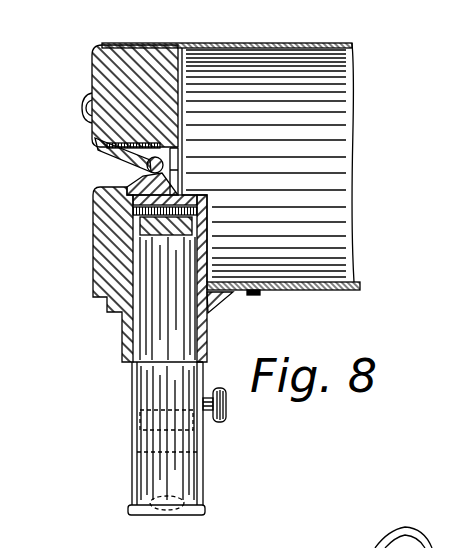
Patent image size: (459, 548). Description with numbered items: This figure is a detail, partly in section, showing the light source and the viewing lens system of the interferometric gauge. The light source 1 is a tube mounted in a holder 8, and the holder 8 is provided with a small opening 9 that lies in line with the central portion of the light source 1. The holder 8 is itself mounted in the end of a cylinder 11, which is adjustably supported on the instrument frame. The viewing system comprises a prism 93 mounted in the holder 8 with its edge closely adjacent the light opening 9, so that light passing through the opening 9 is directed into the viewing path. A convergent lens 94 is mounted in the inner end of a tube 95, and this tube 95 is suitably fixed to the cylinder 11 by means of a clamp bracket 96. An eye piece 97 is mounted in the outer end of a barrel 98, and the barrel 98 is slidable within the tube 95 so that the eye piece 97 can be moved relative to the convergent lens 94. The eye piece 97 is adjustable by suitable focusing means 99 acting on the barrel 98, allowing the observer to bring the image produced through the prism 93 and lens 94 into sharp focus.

The holder 8 is at (90, 62).
The cylinder 11 is at (317, 44).
The light source 1 is at (143, 167).
The prism 93 is at (147, 169).
The small opening 9 is at (179, 168).
The convergent lens 94 is at (152, 232).
The tube 95 is at (126, 340).
The clamp bracket 96 is at (216, 300).
The eye piece 97 is at (185, 500).
The barrel 98 is at (202, 477).
The focusing means 99 is at (227, 408).